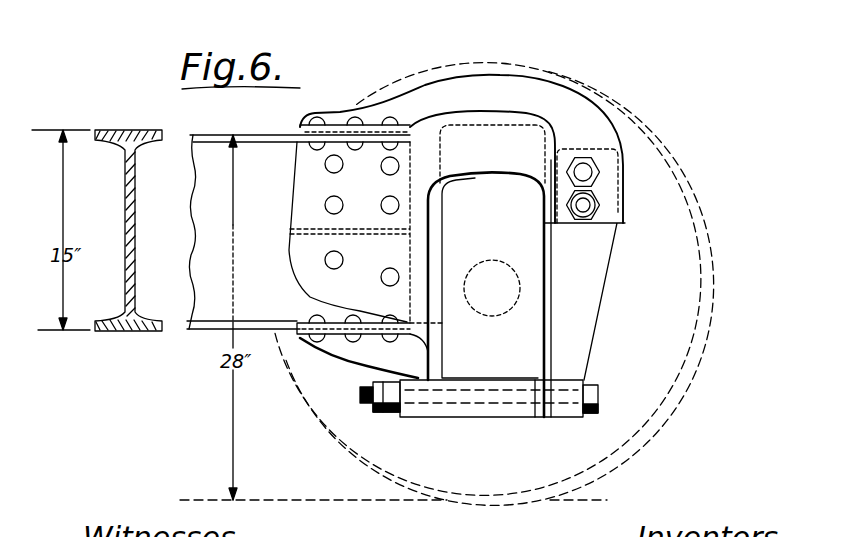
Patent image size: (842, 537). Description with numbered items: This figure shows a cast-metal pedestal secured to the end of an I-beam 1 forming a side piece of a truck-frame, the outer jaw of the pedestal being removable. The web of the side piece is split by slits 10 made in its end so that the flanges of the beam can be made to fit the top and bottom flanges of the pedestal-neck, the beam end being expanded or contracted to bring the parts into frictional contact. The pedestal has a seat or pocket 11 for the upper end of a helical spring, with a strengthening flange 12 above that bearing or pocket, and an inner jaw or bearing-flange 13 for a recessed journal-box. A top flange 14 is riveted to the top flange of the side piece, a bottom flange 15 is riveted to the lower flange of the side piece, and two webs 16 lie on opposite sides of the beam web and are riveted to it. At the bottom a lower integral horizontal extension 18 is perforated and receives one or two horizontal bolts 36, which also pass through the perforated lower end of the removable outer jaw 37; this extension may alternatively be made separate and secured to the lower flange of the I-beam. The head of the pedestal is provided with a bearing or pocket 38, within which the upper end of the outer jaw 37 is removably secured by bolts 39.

The I-beam 1 is at (190, 222).
The slits 10 is at (282, 236).
The seat or pocket 11 is at (512, 161).
The strengthening flange 12 is at (461, 149).
The inner jaw or bearing-flange 13 is at (447, 228).
The top flange 14 is at (303, 126).
The bottom flange 15 is at (298, 338).
The webs 16 is at (349, 232).
The lower integral horizontal extension 18 is at (473, 418).
The horizontal bolts 36 is at (598, 396).
The removable outer jaw 37 is at (584, 301).
The bearing or pocket 38 is at (593, 197).
The bolts 39 is at (596, 172).